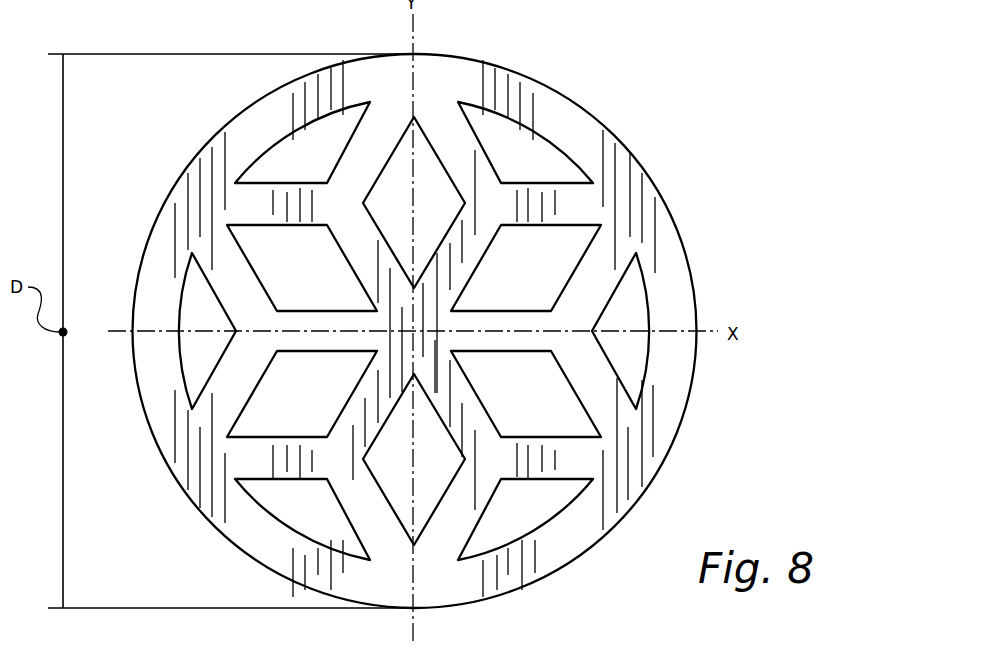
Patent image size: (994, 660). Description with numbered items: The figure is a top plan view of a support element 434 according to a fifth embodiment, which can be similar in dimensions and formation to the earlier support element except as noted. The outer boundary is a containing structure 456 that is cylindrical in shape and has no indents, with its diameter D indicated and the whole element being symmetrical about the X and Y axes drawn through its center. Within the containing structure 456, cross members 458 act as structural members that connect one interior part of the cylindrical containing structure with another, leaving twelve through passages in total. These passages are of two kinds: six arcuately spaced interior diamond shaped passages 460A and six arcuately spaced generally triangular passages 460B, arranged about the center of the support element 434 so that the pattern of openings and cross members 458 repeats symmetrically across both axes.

The support element 434 is at (706, 134).
The containing structure 456 is at (540, 102).
The cross members 458 is at (597, 382).
The interior diamond shaped passages 460A is at (348, 257).
The generally triangular passages 460B is at (300, 530).